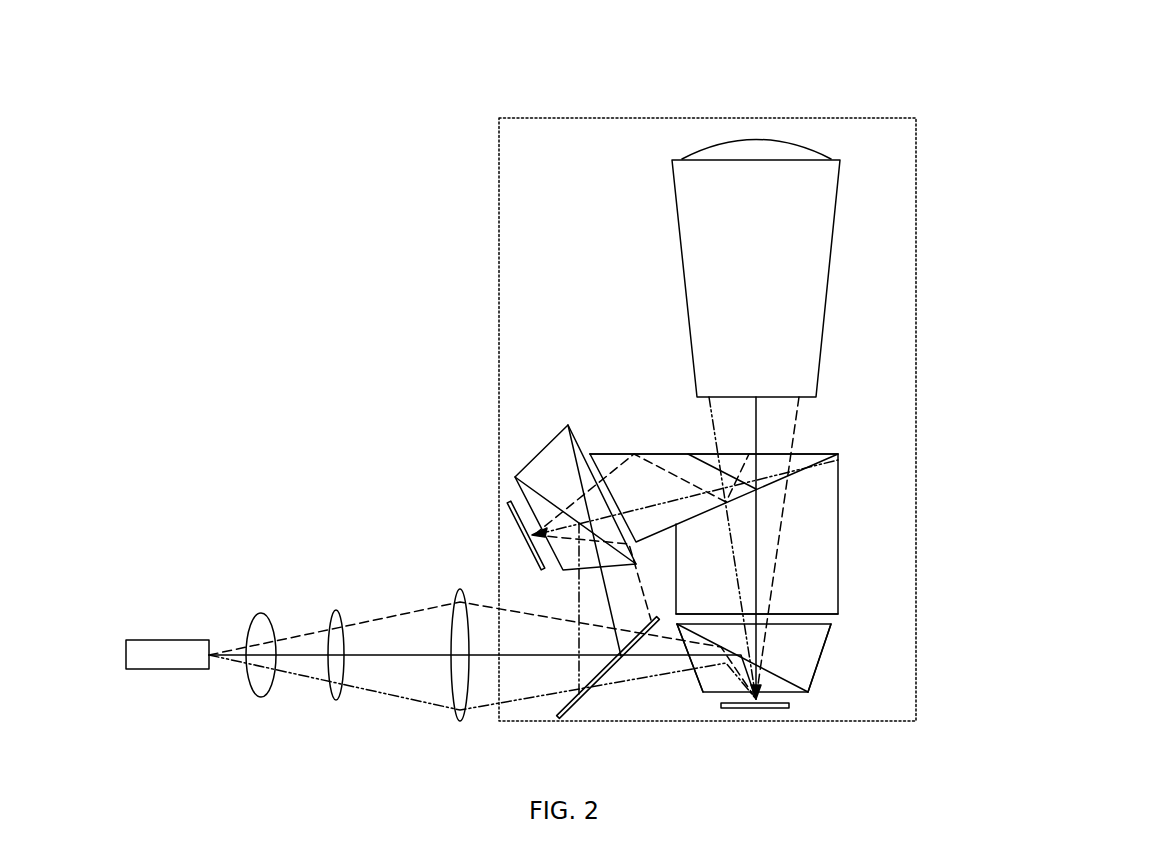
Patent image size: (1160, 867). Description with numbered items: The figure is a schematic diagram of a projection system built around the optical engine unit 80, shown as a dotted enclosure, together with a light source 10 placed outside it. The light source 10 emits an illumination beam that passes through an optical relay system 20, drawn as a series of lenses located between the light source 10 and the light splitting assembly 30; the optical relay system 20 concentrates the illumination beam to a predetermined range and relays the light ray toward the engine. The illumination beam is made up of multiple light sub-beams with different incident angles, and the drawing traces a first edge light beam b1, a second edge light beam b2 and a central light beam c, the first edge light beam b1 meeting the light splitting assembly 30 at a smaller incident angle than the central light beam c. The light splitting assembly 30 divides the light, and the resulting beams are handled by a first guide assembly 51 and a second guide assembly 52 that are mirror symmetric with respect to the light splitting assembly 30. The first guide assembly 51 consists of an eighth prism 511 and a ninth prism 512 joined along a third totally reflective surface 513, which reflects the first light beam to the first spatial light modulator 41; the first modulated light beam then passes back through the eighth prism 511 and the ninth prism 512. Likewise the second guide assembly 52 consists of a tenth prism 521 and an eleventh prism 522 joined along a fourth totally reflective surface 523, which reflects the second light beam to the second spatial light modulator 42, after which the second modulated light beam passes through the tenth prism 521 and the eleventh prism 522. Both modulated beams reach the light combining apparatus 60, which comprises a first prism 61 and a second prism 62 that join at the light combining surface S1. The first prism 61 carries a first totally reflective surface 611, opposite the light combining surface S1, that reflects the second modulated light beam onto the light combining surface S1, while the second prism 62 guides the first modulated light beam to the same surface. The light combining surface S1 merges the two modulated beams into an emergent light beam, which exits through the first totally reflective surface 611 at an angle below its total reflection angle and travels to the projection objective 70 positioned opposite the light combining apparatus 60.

The light source 10 is at (152, 668).
The optical relay system 20 is at (250, 705).
The light splitting assembly 30 is at (570, 708).
The first spatial light modulator 41 is at (753, 708).
The second spatial light modulator 42 is at (512, 525).
The first guide assembly 51 is at (814, 704).
The eighth prism 511 is at (703, 683).
The ninth prism 512 is at (795, 660).
The third totally reflective surface 513 is at (785, 683).
The second guide assembly 52 is at (528, 476).
The tenth prism 521 is at (520, 499).
The eleventh prism 522 is at (555, 458).
The fourth totally reflective surface 523 is at (535, 480).
The light combining apparatus 60 is at (697, 392).
The first prism 61 is at (628, 345).
The first totally reflective surface 611 is at (657, 452).
The second prism 62 is at (820, 583).
The projection objective 70 is at (822, 331).
The optical engine unit 80 is at (631, 102).
The light combining surface S1 is at (837, 460).
The first edge light beam b1 is at (238, 633).
The second edge light beam b2 is at (242, 677).
The central light beam c is at (222, 658).